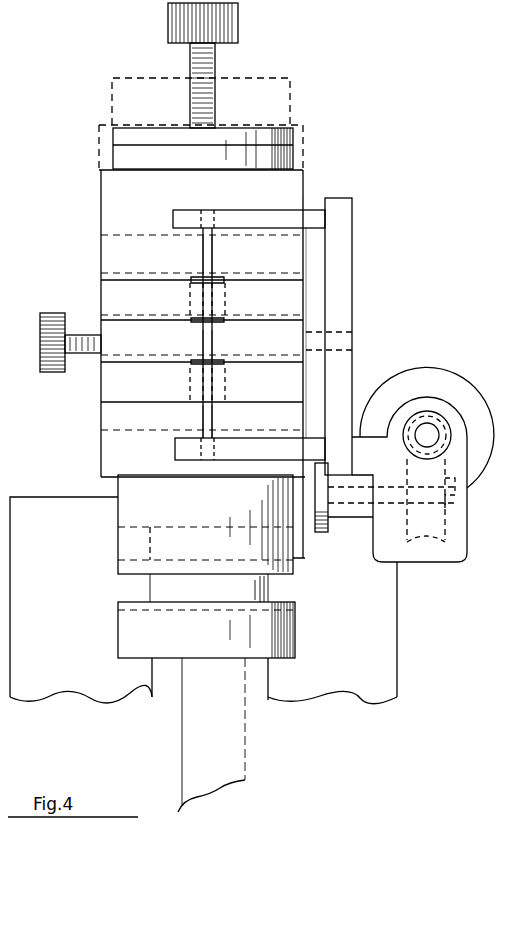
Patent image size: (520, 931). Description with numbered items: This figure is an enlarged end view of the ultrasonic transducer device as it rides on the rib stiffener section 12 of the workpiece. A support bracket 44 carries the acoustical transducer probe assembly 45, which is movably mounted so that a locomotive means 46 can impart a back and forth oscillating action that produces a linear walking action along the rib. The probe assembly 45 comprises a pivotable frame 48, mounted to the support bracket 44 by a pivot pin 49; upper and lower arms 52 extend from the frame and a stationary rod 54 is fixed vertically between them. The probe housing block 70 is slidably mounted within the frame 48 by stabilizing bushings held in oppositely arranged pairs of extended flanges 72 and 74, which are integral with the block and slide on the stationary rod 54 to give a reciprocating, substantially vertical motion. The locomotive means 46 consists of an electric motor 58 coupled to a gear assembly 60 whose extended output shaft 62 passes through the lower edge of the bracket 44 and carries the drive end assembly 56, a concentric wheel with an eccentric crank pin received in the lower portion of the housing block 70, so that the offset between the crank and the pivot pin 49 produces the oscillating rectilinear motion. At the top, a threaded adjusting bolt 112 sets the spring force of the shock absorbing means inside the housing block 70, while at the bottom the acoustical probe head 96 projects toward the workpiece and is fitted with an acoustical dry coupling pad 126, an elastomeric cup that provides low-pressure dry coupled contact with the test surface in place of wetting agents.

The rib stiffener section 12 is at (195, 723).
The support bracket 44 is at (337, 280).
The acoustical transducer probe assembly 45 is at (96, 253).
The locomotive means 46 is at (430, 352).
The pivotable frame 48 is at (315, 260).
The pivot pin 49 is at (340, 340).
The arm 52 is at (188, 210).
The stationary rod 54 is at (202, 341).
The drive end assembly / concentric wheel 56 is at (322, 540).
The electric motor 58 is at (470, 380).
The gear assembly 60 is at (460, 517).
The output shaft 62 is at (357, 497).
The probe housing block 70 is at (290, 182).
The extended flanges 72 is at (190, 299).
The extended flanges 74 is at (278, 295).
The acoustical probe head 96 is at (112, 609).
The threaded adjusting bolt 112 is at (218, 62).
The acoustical dry coupling pad 126 is at (143, 645).